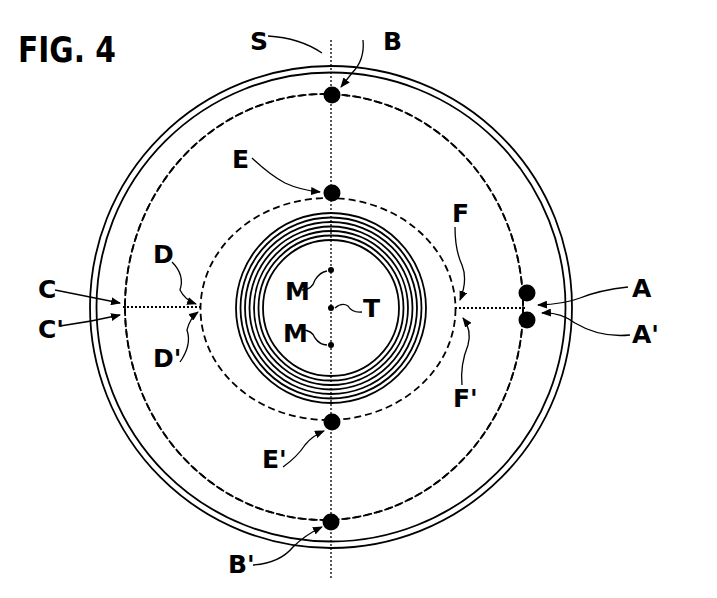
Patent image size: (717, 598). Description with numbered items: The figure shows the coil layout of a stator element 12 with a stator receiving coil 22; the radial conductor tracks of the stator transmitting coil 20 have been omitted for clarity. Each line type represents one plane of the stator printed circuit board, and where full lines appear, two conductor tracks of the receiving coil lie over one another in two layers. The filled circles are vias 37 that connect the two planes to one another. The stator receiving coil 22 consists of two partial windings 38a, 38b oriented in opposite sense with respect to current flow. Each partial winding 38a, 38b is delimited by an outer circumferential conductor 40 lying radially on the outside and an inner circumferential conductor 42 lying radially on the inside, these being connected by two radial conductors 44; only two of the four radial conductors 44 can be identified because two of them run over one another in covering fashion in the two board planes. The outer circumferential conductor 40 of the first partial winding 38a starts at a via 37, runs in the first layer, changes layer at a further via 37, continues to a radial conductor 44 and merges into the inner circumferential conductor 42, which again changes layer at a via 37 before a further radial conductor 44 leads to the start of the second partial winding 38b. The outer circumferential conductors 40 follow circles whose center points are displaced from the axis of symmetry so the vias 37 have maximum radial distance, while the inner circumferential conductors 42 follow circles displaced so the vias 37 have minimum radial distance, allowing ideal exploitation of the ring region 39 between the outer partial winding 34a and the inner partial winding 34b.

The stator element 12 is at (502, 78).
The stator transmitting coil 20 is at (542, 182).
The stator receiving coil 22 is at (532, 267).
The outer partial winding 34a is at (472, 104).
The inner partial winding 34b is at (387, 232).
The via 37 is at (328, 184).
The first partial winding 38a is at (147, 208).
The second partial winding 38b is at (183, 430).
The ring region 39 is at (541, 333).
The outer circumferential conductor 40 is at (162, 177).
The inner circumferential conductor 42 is at (249, 232).
The radial conductor 44 is at (148, 305).